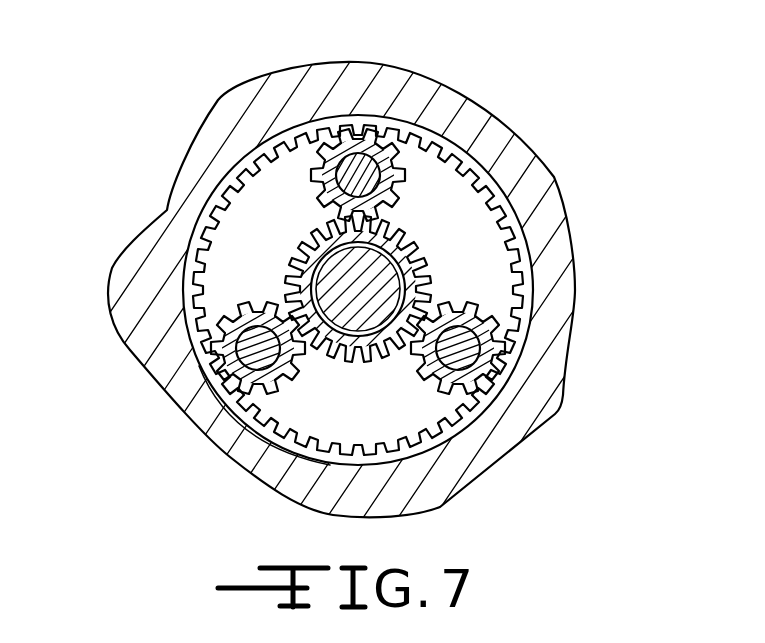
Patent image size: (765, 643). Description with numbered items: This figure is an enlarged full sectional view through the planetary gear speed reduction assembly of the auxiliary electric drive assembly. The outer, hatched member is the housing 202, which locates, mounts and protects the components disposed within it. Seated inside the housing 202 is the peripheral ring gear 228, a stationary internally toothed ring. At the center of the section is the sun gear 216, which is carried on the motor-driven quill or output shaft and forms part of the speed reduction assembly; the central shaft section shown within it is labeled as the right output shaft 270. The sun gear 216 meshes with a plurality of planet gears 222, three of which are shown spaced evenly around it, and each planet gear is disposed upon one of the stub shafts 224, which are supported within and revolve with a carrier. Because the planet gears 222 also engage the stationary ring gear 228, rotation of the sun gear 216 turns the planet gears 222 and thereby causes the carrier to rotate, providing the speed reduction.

The housing 202 is at (270, 92).
The ring gear 228 is at (270, 143).
The sun gear 216 is at (437, 281).
The right output shaft 270 is at (363, 282).
The planet gears 222 is at (463, 328).
The stub shafts 224 is at (462, 349).